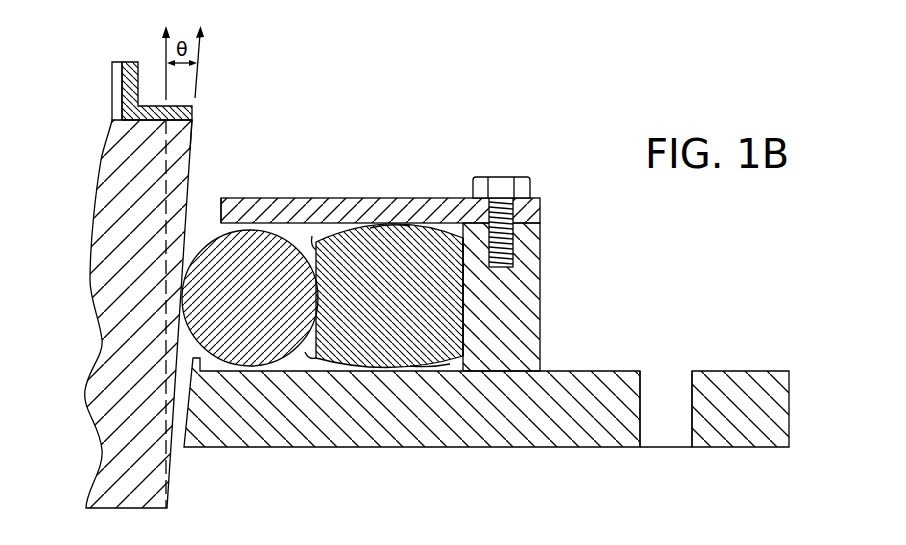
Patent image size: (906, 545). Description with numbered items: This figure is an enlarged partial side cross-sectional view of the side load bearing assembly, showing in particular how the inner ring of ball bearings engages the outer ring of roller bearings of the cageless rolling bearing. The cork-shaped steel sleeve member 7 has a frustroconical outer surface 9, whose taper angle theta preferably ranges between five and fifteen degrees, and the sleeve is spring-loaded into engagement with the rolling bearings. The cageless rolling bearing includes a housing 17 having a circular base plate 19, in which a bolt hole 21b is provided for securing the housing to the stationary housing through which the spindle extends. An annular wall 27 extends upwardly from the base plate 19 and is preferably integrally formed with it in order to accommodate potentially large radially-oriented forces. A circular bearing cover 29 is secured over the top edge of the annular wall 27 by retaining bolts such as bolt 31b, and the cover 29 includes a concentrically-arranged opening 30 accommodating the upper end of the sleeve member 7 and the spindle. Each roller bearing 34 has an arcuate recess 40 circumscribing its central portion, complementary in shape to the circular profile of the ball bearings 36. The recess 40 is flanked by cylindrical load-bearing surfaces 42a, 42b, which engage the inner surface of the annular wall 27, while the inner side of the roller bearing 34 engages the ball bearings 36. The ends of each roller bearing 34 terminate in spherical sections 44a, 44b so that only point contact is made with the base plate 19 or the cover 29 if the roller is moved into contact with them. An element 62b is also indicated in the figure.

The sleeve member 7 is at (136, 282).
The frustroconical outer surface 9 is at (198, 121).
The housing 17 is at (652, 268).
The circular base plate 19 is at (573, 428).
The bolt hole 21b is at (690, 432).
The annular wall 27 is at (540, 268).
The circular bearing cover 29 is at (345, 205).
The opening 30 is at (221, 200).
The retaining bolt 31b is at (500, 185).
The roller bearing 34 is at (401, 311).
The ball bearing 36 is at (263, 311).
The arcuate recess 40 is at (463, 300).
The cylindrical load-bearing surface 42a is at (312, 245).
The cylindrical load-bearing surface 42b is at (305, 360).
The spherical section 44a is at (400, 225).
The spherical section 44b is at (430, 362).
The bracket 62b is at (125, 62).